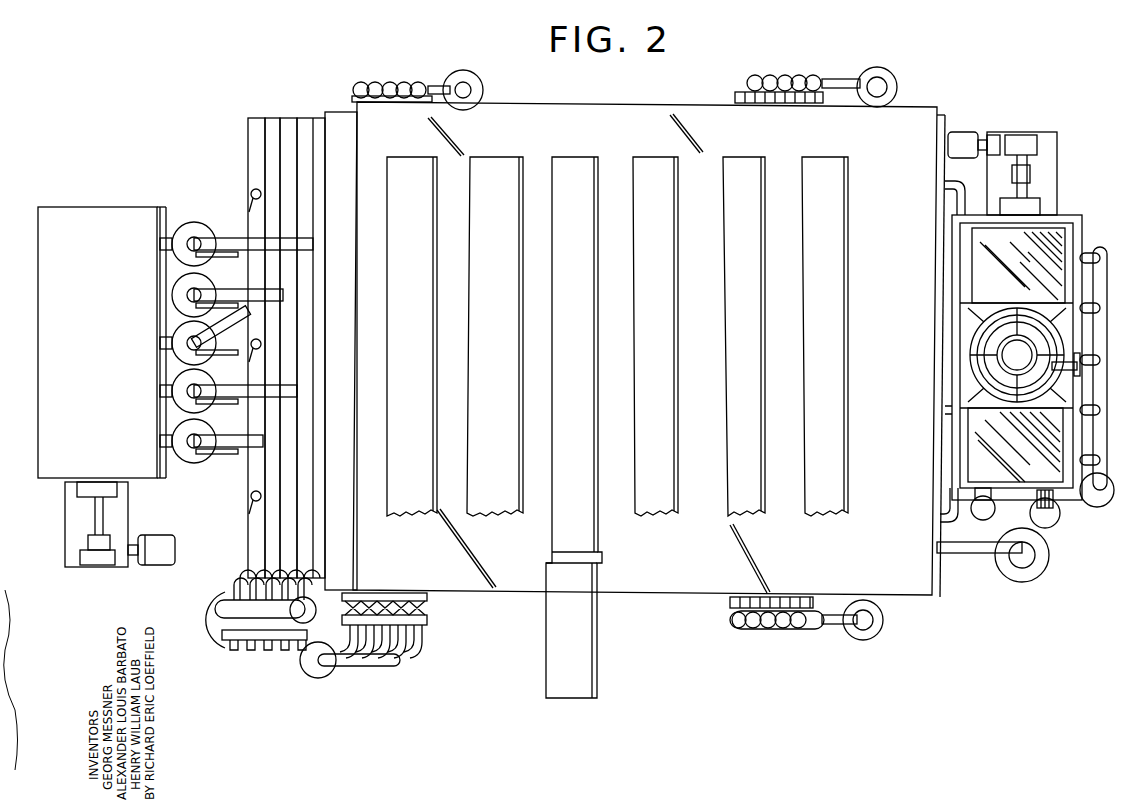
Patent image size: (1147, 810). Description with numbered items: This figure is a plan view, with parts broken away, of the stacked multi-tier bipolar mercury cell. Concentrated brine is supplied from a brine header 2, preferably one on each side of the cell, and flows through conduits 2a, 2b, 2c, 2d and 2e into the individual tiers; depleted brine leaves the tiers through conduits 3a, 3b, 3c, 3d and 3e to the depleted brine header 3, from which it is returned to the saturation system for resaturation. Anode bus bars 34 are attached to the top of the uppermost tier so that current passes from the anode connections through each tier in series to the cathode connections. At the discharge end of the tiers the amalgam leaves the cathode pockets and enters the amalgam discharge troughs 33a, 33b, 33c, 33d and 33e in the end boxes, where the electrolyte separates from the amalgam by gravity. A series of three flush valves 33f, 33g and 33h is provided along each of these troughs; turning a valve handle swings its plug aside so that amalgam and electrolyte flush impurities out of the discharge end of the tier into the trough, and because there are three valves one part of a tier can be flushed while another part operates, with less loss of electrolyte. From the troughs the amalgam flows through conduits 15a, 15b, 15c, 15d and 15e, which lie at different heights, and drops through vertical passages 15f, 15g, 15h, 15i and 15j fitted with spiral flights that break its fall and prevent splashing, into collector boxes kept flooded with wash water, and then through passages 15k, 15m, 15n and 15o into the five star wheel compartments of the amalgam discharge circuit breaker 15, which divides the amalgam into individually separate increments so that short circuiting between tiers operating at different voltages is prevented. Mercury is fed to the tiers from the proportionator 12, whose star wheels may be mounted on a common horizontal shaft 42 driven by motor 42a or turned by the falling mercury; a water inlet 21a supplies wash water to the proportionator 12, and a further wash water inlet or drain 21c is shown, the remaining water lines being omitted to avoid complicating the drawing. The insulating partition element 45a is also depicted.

The concentrated brine header 2 is at (478, 62).
The brine inlet conduit 2a is at (418, 640).
The brine inlet conduit 2b is at (402, 650).
The brine inlet conduit 2c is at (388, 645).
The brine inlet conduit 2d is at (370, 640).
The brine inlet conduit 2e is at (352, 635).
The depleted brine header 3 is at (885, 72).
The depleted brine outlet conduit 3a is at (802, 628).
The depleted brine outlet conduit 3b is at (785, 628).
The depleted brine outlet conduit 3c is at (770, 628).
The depleted brine outlet conduit 3d is at (752, 628).
The depleted brine outlet conduit 3e is at (735, 628).
The proportionator 12 is at (1064, 340).
The amalgam discharge circuit breaker 15 is at (101, 206).
The amalgam discharge conduit 15a is at (232, 240).
The amalgam discharge conduit 15b is at (272, 288).
The amalgam discharge conduit 15c is at (248, 318).
The amalgam discharge conduit 15d is at (285, 400).
The amalgam discharge conduit 15e is at (215, 465).
The vertical amalgam passage 15f is at (194, 230).
The vertical amalgam passage 15g is at (175, 303).
The vertical amalgam passage 15h is at (178, 355).
The vertical amalgam passage 15i is at (178, 403).
The vertical amalgam passage 15j is at (184, 460).
The amalgam passage 15k is at (158, 247).
The amalgam passage 15m is at (158, 345).
The amalgam passage 15n is at (158, 395).
The amalgam passage 15o is at (158, 446).
The water inlet 21a is at (1080, 372).
The wash water inlet or drain 21c is at (215, 608).
The amalgam discharge trough 33a is at (328, 110).
The amalgam discharge trough 33b is at (307, 118).
The amalgam discharge trough 33c is at (290, 118).
The amalgam discharge trough 33d is at (272, 118).
The amalgam discharge trough 33e is at (252, 120).
The flush valve 33f is at (250, 506).
The flush valve 33g is at (258, 352).
The flush valve 33h is at (250, 196).
The anode bus bar 34 is at (449, 455).
The common horizontal shaft 42 is at (95, 520).
The motor 42a is at (1021, 145).
The motor 45a is at (155, 560).